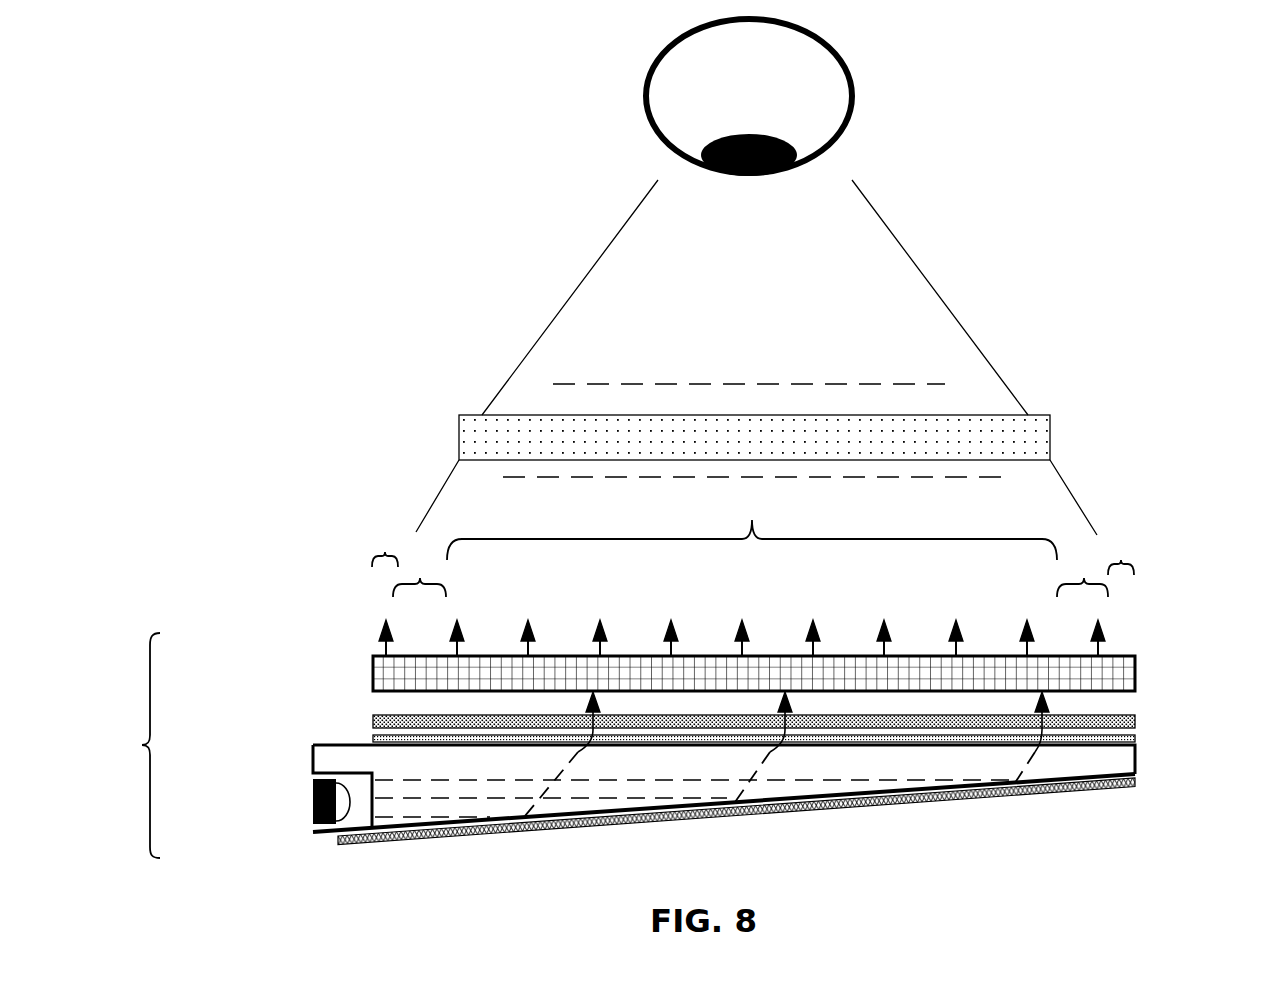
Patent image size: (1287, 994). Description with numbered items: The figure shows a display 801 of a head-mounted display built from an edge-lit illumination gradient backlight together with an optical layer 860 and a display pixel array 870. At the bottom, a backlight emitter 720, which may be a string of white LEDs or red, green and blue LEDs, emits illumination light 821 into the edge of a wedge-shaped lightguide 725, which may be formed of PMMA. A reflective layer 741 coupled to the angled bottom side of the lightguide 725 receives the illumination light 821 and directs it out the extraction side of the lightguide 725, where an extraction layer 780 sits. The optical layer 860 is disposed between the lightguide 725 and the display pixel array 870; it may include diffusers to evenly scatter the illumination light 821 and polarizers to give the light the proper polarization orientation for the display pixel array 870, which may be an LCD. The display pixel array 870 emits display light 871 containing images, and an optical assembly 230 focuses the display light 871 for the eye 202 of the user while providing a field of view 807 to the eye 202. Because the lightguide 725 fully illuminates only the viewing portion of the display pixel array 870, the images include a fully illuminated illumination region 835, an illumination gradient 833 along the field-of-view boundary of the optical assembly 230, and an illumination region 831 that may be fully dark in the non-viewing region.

The eye 202 is at (853, 138).
The optical assembly 230 is at (768, 450).
The FOV 807 is at (756, 430).
The illumination region 835 is at (752, 528).
The illumination gradient 833 is at (750, 573).
The illumination region 831 is at (755, 546).
The display light 871 is at (1143, 618).
The display pixel array 870 is at (373, 680).
The optical layer 860 is at (1135, 722).
The extraction layer 780 is at (1140, 738).
The lightguide 725 is at (1140, 757).
The illumination light 821 is at (784, 757).
The backlight emitter 720 is at (313, 812).
The reflective layer 741 is at (338, 838).
The display 801 is at (112, 745).